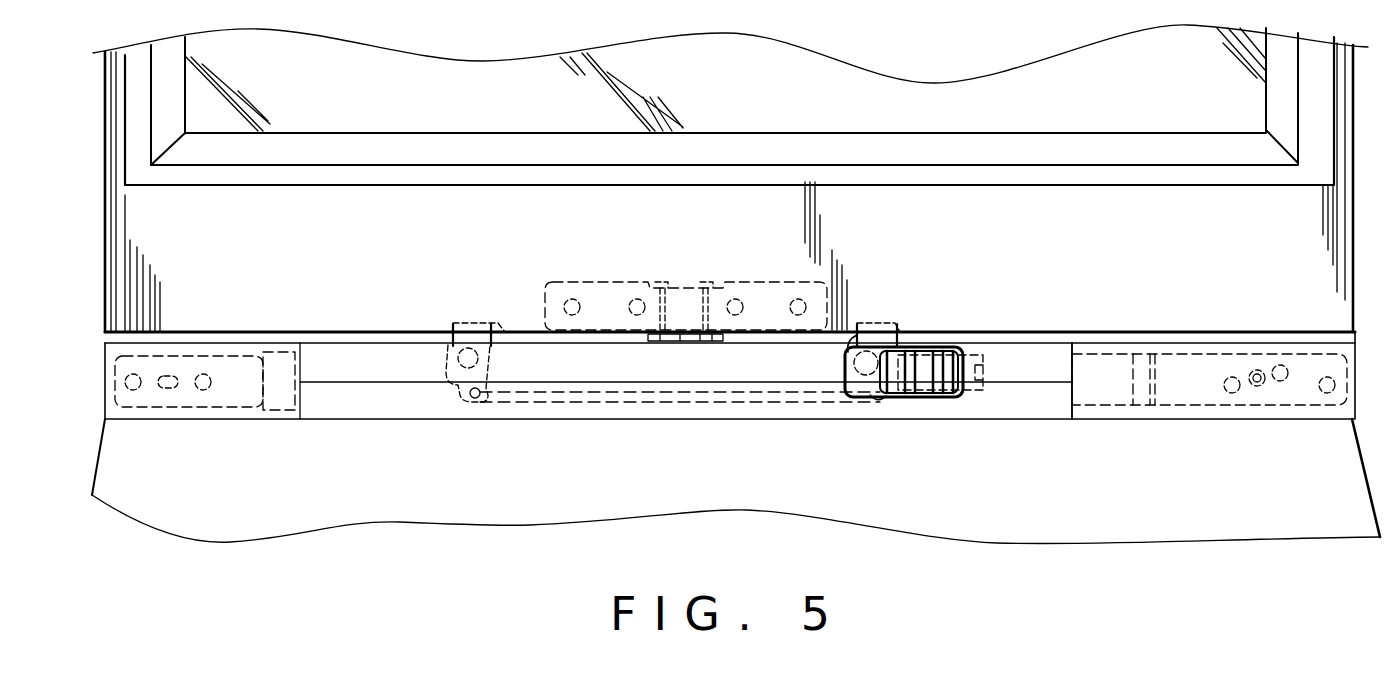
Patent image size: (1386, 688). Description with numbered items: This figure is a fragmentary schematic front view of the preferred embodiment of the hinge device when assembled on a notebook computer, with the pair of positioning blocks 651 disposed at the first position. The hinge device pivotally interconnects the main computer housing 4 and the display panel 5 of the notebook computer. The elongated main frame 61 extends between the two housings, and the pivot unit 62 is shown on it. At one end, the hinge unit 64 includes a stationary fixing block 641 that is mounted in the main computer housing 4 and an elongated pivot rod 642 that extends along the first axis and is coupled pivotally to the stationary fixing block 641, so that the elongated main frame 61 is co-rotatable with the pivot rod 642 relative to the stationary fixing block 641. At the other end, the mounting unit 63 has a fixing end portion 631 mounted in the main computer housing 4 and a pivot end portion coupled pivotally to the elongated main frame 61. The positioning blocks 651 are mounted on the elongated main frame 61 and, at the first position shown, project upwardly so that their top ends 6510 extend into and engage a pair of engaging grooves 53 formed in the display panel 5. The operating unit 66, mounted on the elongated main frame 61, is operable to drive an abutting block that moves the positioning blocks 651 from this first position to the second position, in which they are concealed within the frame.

The main computer housing 4 is at (1322, 497).
The display panel 5 is at (142, 243).
The elongated main frame 61 is at (352, 334).
The pivot unit 62 is at (573, 281).
The mounting unit 63 is at (225, 408).
The fixing end portion 631 is at (172, 403).
The hinge unit 64 is at (1210, 407).
The stationary fixing block 641 is at (1300, 367).
The pivot rod 642 is at (1078, 419).
The positioning block 651 is at (455, 366).
The top end 6510 is at (877, 330).
The engaging groove 53 is at (905, 323).
The operating unit 66 is at (916, 404).